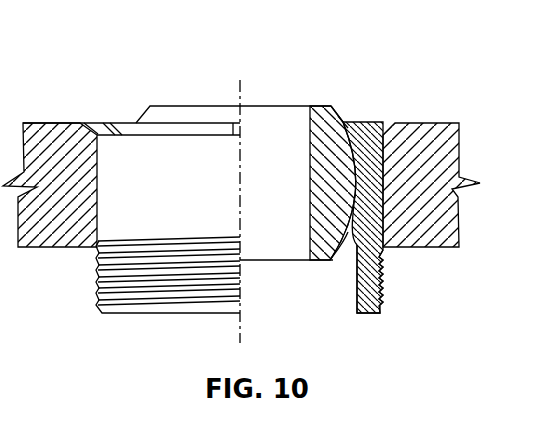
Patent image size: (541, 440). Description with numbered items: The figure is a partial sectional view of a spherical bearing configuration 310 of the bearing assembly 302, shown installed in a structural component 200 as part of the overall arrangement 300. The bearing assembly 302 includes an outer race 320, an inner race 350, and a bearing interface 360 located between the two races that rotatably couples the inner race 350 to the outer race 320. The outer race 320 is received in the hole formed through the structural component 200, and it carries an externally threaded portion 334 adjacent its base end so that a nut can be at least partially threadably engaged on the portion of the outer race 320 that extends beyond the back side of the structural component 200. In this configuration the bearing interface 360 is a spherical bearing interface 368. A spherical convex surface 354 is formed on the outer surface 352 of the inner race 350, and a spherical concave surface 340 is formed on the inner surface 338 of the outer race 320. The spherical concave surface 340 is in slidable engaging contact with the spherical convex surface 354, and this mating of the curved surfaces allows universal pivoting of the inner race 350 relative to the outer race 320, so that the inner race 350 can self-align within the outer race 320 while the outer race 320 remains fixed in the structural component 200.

The fastener assembly 300 is at (428, 75).
The structural component 200 is at (453, 152).
The bearing assembly 302 is at (167, 104).
The spherical bearing configuration 310 is at (178, 149).
The externally threaded portion 334 is at (96, 282).
The inner race 350 is at (310, 106).
The bearing interface 360 is at (343, 121).
The spherical bearing interface 368 is at (345, 118).
The outer race 320 is at (369, 121).
The inner surface 338 is at (383, 218).
The spherical concave surface 340 is at (350, 236).
The outer surface 352 is at (348, 232).
The spherical convex surface 354 is at (343, 217).